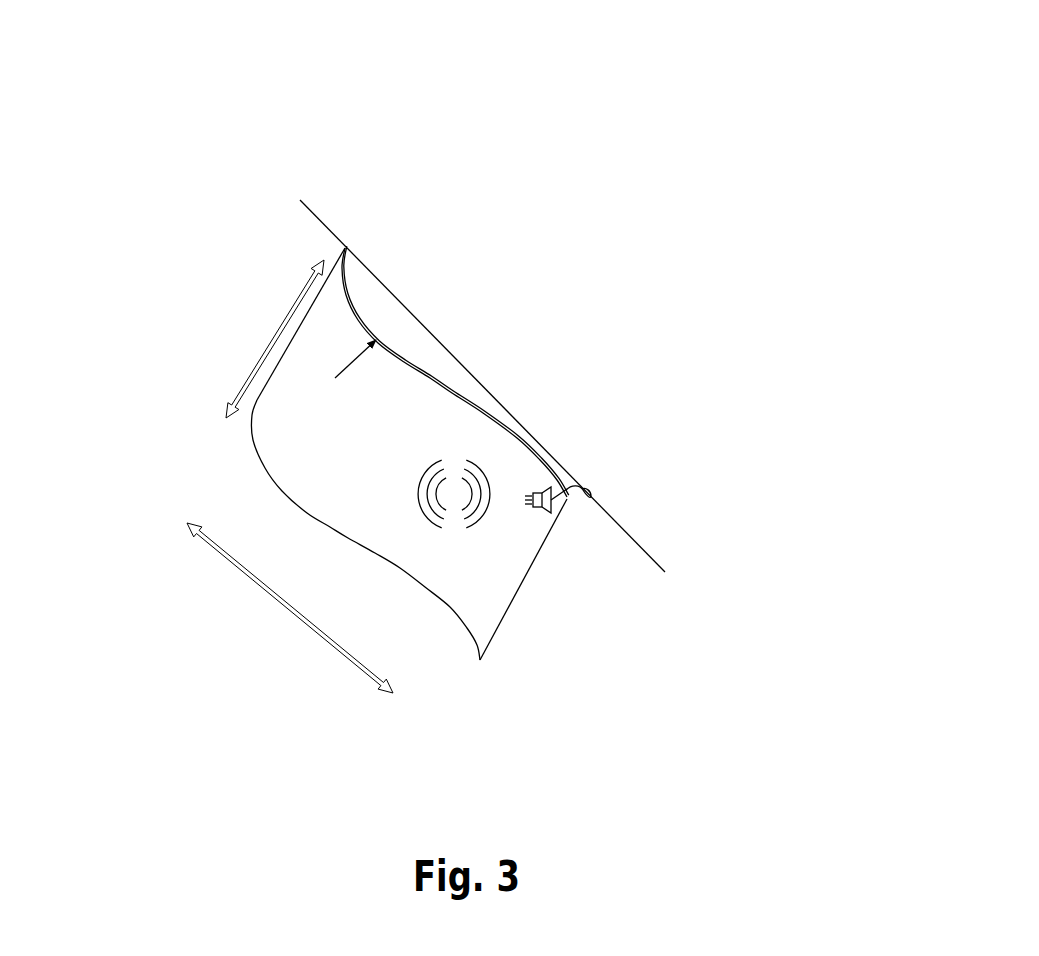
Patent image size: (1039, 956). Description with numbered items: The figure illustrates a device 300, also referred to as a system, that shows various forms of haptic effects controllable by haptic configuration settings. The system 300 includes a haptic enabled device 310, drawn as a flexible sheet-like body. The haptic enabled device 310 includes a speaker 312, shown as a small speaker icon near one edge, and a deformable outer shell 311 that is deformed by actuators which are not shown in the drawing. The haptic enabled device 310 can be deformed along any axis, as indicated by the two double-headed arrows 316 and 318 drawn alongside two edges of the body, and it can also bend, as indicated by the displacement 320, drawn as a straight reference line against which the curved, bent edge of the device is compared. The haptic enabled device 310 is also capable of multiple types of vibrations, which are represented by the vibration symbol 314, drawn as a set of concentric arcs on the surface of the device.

The device 300 is at (1019, 49).
The haptic enabled device 310 is at (326, 524).
The deformable outer shell 311 is at (507, 598).
The speaker 312 is at (593, 499).
The vibration symbol 314 is at (483, 477).
The arrow 316 is at (278, 335).
The arrow 318 is at (265, 593).
The displacement 320 is at (412, 303).